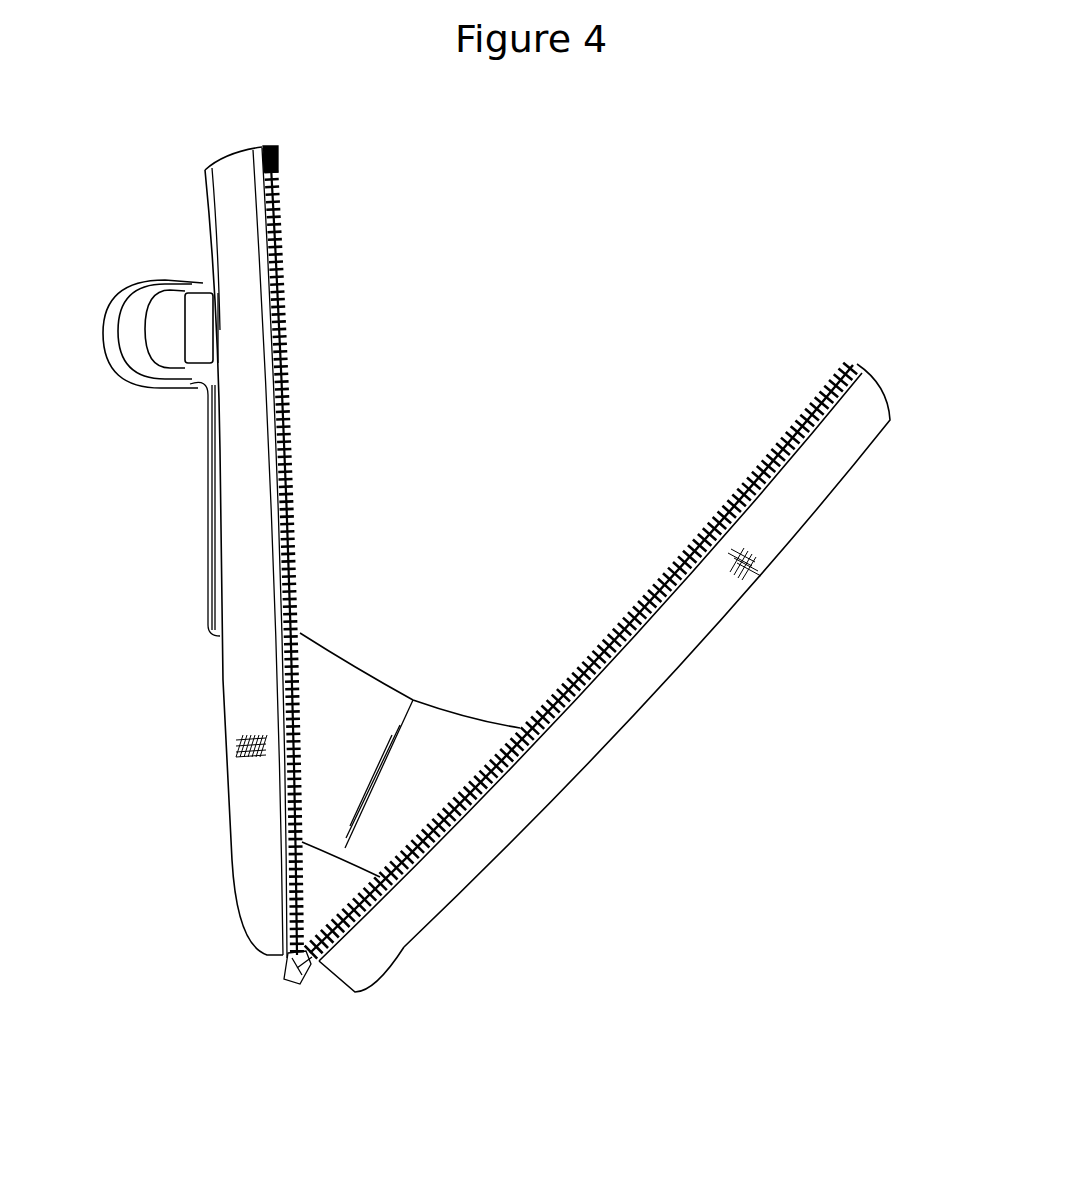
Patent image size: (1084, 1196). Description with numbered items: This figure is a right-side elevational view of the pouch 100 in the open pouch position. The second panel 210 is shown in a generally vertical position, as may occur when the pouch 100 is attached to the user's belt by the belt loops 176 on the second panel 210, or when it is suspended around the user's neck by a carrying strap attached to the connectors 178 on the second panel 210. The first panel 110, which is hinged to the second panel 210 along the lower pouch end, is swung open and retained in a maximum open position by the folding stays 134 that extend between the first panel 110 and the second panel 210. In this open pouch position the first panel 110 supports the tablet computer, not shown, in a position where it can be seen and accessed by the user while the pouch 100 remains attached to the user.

The pouch 100 is at (703, 173).
The first panel 110 is at (637, 707).
The folding stays 134 is at (353, 705).
The belt loops 176 is at (207, 502).
The connectors 178 is at (150, 293).
The second panel 210 is at (223, 690).